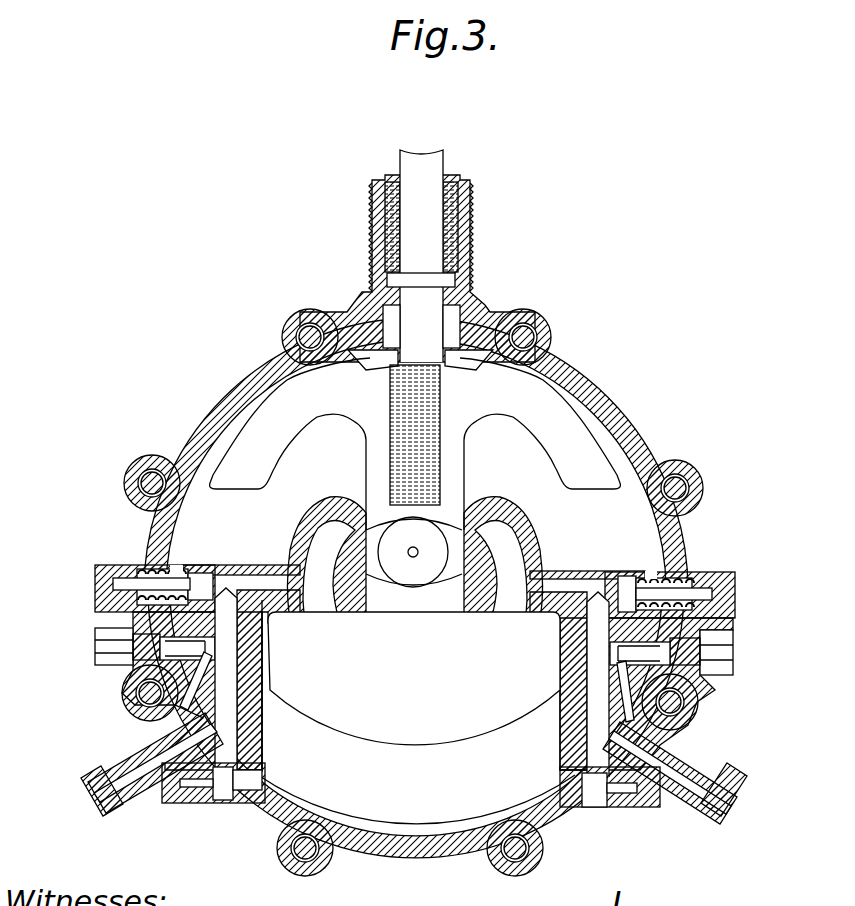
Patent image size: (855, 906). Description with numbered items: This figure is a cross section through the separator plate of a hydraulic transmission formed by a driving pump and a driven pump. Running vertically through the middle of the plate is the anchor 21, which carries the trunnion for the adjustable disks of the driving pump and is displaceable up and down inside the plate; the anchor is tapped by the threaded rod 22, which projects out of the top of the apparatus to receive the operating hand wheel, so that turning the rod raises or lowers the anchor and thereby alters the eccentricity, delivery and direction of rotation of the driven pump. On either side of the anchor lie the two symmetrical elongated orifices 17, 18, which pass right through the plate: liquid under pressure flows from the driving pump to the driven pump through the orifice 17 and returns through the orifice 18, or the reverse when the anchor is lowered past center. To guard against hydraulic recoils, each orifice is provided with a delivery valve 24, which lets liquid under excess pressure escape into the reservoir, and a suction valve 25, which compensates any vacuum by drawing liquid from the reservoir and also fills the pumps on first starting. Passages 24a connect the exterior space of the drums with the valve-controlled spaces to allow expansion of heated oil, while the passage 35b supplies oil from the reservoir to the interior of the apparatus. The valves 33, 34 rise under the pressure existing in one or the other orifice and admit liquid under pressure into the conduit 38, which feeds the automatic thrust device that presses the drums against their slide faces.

The threaded rod 22 is at (418, 330).
The passage 35b is at (368, 356).
The anchor 21 is at (452, 466).
The orifice 17 is at (324, 538).
The orifice 18 is at (506, 546).
The delivery valve 24 is at (198, 578).
The passage 24a is at (180, 562).
The valve 33 is at (210, 656).
The valve 34 is at (622, 644).
The conduit 38 is at (153, 740).
The suction valve 25 is at (227, 781).